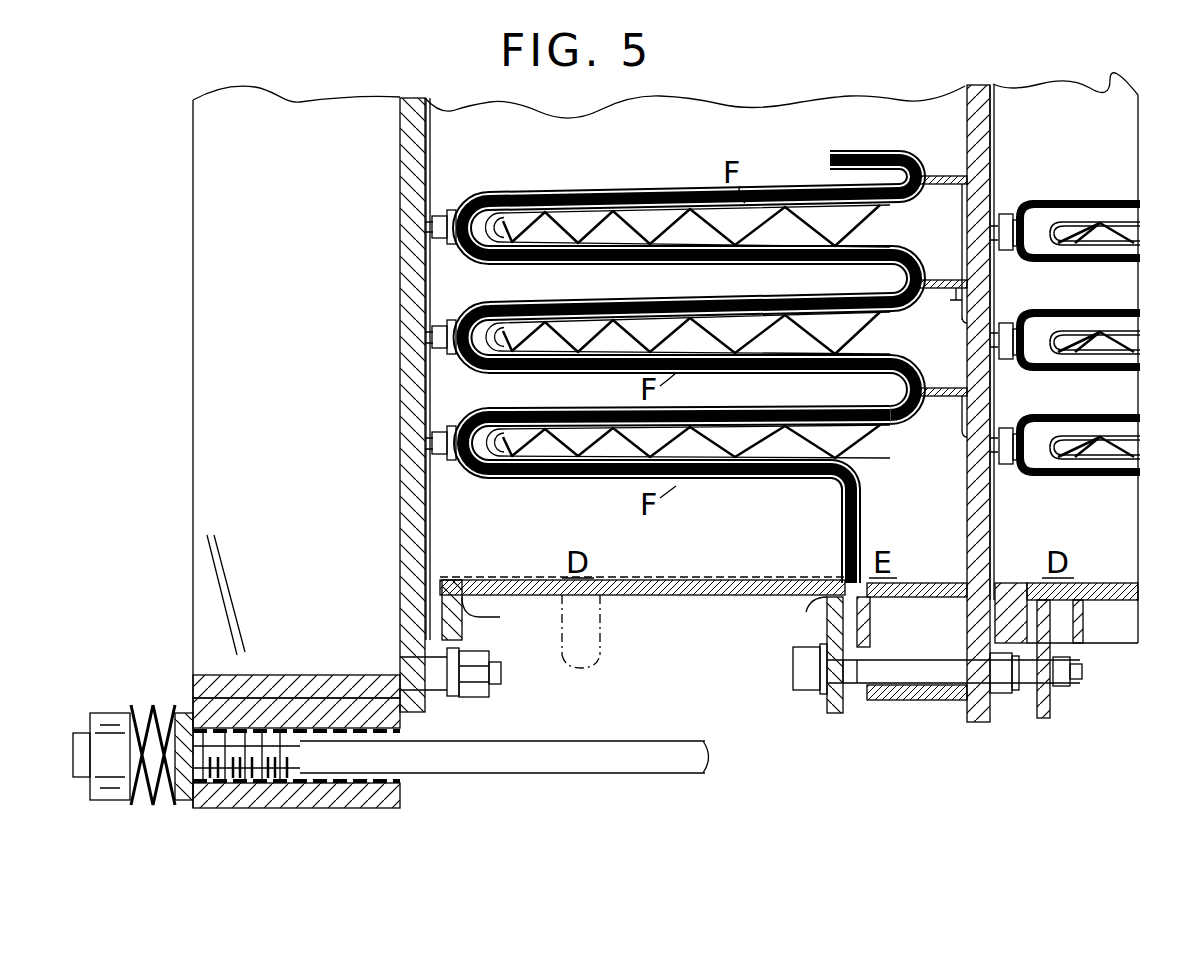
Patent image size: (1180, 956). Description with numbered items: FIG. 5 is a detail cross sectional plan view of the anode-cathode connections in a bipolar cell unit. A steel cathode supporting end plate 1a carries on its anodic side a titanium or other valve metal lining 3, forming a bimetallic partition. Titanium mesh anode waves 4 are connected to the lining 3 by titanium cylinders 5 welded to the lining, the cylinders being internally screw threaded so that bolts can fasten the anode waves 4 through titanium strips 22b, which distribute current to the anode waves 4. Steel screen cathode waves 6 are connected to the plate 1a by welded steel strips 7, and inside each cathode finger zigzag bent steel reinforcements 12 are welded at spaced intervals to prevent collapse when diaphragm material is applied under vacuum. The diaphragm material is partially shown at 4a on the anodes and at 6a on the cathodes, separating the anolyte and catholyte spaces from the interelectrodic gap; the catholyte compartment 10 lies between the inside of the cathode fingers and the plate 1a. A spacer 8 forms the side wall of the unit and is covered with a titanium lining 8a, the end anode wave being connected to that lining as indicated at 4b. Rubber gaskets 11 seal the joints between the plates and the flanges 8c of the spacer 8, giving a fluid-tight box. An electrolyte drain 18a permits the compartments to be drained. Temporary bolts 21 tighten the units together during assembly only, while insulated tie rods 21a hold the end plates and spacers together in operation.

The cathode supporting end plate 1a is at (420, 203).
The valve metal lining 3 is at (429, 182).
The anode waves 4 is at (556, 308).
The anode diaphragm 4a is at (748, 305).
The end anode wave connection 4b is at (843, 578).
The connectors 5 is at (441, 322).
The cathode waves 6 is at (643, 210).
The cathode diaphragm material 6a is at (670, 318).
The steel strips 7 is at (953, 377).
The spacer 8 is at (681, 585).
The titanium lining 8a is at (742, 582).
The flanges 8c is at (462, 615).
The catholyte compartment 10 is at (940, 184).
The rubber gaskets 11 is at (871, 627).
The zigzag bent steel reinforcements 12 is at (818, 331).
The electrolyte drain 18a is at (601, 636).
The temporary bolts 21 is at (496, 668).
The tie rods 21a is at (542, 756).
The titanium strips 22b is at (428, 340).